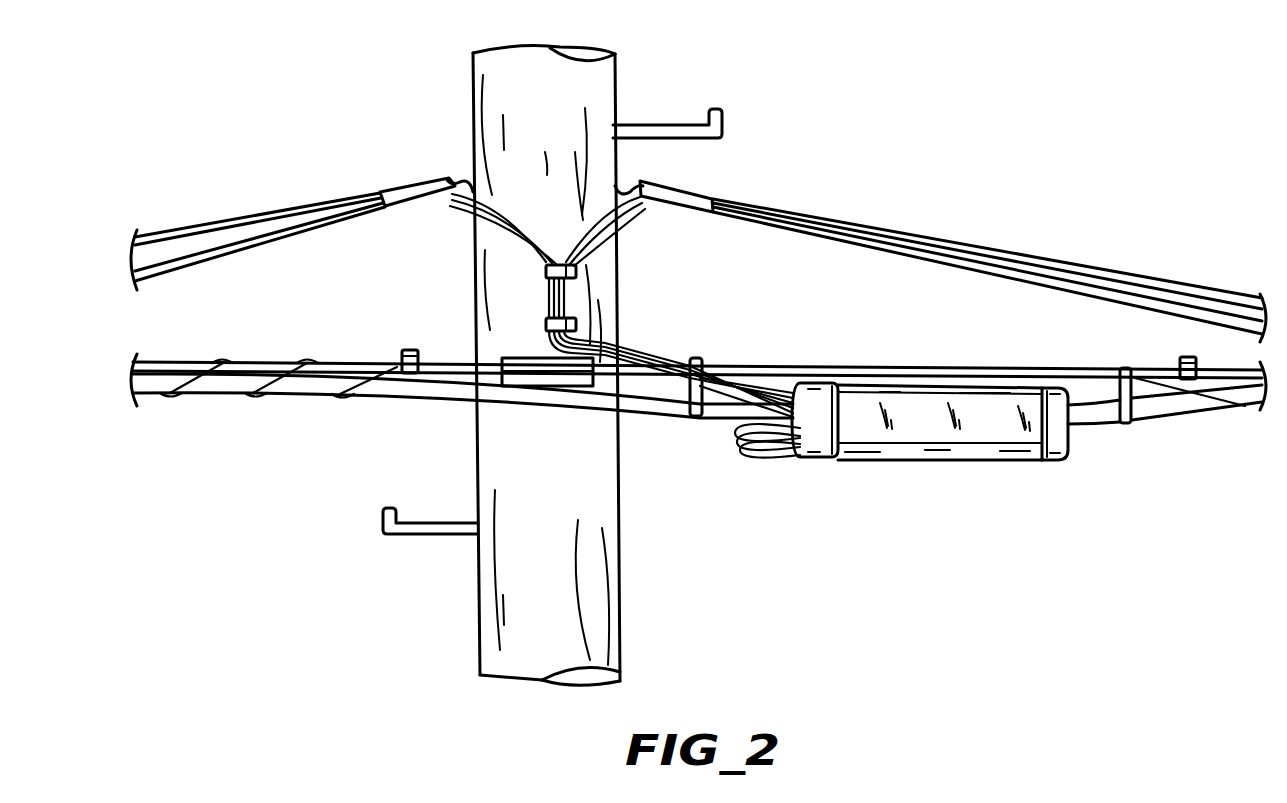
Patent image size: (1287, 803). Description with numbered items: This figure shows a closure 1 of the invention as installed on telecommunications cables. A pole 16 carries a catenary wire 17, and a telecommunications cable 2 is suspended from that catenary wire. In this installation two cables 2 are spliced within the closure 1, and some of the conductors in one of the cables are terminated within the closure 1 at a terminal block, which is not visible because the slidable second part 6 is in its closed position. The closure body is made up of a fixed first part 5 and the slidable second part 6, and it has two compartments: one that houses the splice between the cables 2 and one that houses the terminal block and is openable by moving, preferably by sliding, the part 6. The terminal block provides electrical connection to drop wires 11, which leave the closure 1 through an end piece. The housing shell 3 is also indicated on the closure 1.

The closure 1 is at (944, 410).
The telecommunications cable 2 is at (427, 387).
The housing shell 3 is at (1007, 393).
The fixed first part 5 is at (908, 452).
The slidable second part 6 is at (930, 407).
The drop wires 11 is at (563, 298).
The pole 16 is at (600, 642).
The catenary wire 17 is at (350, 360).